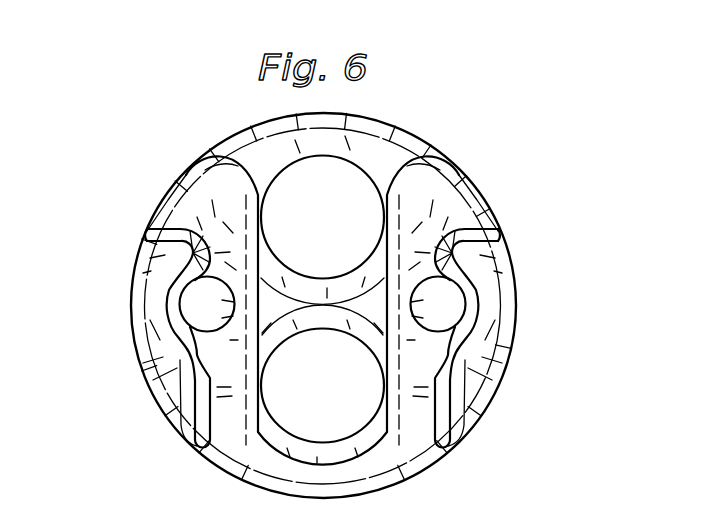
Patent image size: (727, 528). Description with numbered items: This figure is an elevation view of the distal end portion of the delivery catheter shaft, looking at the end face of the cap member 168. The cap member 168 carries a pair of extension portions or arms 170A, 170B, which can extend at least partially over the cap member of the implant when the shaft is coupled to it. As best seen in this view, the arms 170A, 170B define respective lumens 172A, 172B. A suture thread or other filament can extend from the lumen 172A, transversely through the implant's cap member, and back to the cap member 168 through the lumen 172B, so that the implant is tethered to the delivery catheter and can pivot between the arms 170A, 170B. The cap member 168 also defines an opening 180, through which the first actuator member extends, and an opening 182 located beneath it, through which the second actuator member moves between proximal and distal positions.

The cap member 168 is at (425, 140).
The arm 170A is at (437, 182).
The arm 170B is at (203, 182).
The lumen 172A is at (466, 296).
The lumen 172B is at (179, 303).
The opening 180 is at (350, 228).
The opening 182 is at (350, 400).